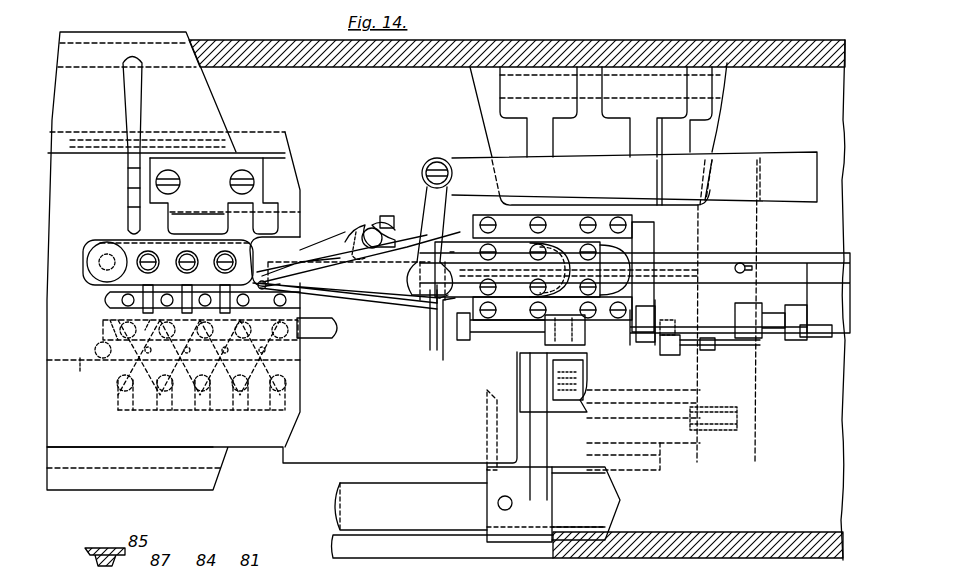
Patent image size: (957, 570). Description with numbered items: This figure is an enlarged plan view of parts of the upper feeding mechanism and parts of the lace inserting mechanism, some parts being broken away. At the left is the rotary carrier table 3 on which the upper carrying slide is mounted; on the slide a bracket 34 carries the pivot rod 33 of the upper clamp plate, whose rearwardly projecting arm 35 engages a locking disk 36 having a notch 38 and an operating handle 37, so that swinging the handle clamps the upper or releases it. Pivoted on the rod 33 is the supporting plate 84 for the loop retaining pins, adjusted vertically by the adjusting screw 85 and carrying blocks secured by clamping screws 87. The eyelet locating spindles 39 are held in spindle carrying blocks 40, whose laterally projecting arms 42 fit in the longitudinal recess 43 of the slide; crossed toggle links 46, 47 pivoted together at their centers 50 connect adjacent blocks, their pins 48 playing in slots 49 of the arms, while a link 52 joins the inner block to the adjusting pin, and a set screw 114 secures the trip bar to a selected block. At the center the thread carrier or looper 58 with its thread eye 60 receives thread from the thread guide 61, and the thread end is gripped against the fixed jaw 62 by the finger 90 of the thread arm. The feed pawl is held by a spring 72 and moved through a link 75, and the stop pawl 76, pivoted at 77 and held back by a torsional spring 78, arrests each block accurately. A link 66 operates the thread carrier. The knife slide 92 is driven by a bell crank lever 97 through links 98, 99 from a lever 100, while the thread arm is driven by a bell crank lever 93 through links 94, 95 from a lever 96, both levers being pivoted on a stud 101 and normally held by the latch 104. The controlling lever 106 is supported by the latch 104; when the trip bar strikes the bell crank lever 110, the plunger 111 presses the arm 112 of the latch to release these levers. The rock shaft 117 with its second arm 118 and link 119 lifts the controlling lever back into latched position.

The rotary disk or table 3 is at (220, 115).
The operating handle 37 is at (124, 98).
The bracket 34 is at (188, 158).
The clamping screws 87 is at (187, 262).
The pivot rod 33 is at (178, 228).
The locking disk 36 is at (128, 168).
The notch 38 is at (128, 188).
The rearwardly projecting arm 35 is at (130, 207).
The supporting plate 84 is at (258, 237).
The adjusting screw 85 is at (98, 268).
The spindles 39 is at (102, 300).
The spindle carrying block 40 is at (290, 303).
The set screw 114 is at (112, 328).
The central pivot 50 is at (268, 350).
The toggle link 47 is at (262, 360).
The toggle link 46 is at (258, 373).
The pins 48 is at (270, 392).
The slots 49 is at (280, 400).
The laterally projecting arms 42 is at (272, 400).
The link 52 is at (78, 365).
The longitudinal recess 43 is at (88, 450).
The thread eye 60 is at (265, 283).
The thread carrier or looper 58 is at (392, 300).
The laterally projecting finger 90 is at (428, 290).
The stop pawl 76 is at (345, 242).
The torsional spring 78 is at (372, 228).
The pivot 77 is at (384, 216).
The link 66 is at (792, 160).
The spring 72 is at (392, 240).
The controlling lever 106 is at (533, 130).
The lever 96 is at (648, 130).
The lever 100 is at (676, 136).
The stud 101 is at (714, 90).
The plunger 111 is at (590, 318).
The link 75 is at (768, 255).
The knife slide 92 is at (728, 268).
The link 95 is at (690, 296).
The link 94 is at (772, 314).
The link 99 is at (672, 358).
The bell crank lever 93 is at (730, 348).
The bell crank lever 97 is at (775, 345).
The link 98 is at (812, 335).
The thread guide 61 is at (432, 345).
The fixed jaw 62 is at (444, 352).
The bell crank lever 110 is at (510, 330).
The arm 112 is at (590, 360).
The link 119 is at (570, 362).
The second arm 118 is at (520, 424).
The rock shaft 117 is at (340, 505).
The latch 104 is at (668, 470).